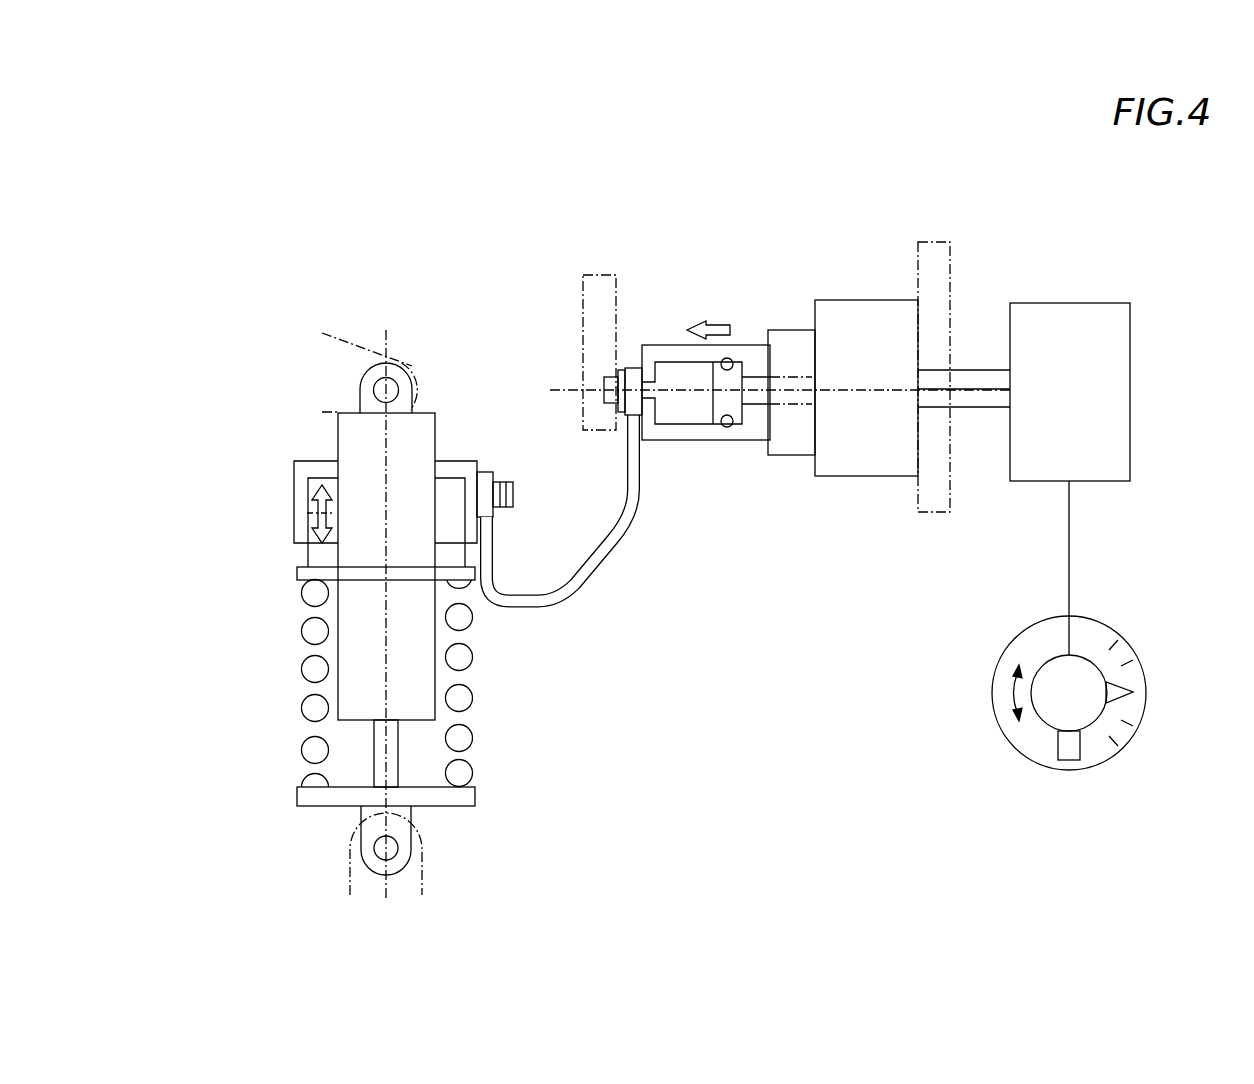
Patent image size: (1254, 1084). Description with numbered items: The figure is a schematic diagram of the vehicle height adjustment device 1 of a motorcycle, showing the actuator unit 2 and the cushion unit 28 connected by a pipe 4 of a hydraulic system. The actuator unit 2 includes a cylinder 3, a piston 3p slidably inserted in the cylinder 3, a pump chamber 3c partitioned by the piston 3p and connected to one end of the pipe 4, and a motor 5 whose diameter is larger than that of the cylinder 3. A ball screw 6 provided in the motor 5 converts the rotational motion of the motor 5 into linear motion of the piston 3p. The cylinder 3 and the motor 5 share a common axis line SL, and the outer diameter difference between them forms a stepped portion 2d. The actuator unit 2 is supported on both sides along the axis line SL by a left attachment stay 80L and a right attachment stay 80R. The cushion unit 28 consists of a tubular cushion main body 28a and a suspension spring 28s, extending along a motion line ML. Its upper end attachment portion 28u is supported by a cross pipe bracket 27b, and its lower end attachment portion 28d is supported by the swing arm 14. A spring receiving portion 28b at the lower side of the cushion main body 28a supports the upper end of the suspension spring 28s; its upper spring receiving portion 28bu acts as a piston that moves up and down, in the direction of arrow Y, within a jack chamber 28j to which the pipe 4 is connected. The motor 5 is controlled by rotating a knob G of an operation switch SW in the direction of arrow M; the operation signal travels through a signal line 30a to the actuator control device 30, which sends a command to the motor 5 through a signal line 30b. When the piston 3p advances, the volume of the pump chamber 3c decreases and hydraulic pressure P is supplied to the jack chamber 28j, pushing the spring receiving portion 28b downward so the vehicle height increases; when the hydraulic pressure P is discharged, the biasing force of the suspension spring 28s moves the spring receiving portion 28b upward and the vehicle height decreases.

The vehicle height adjustment device 1 is at (500, 225).
The actuator unit 2 is at (809, 288).
The stepped portion 2d is at (810, 456).
The cylinder 3 is at (660, 345).
The pump chamber 3c is at (678, 415).
The piston 3p is at (735, 430).
The pipe 4 is at (602, 588).
The motor 5 is at (865, 310).
The ball screw 6 is at (795, 372).
The swing arm 14 is at (423, 880).
The cross pipe bracket 27b is at (355, 340).
The cushion unit 28 is at (330, 432).
The cushion main body 28a is at (352, 452).
The spring receiving portion 28b is at (290, 576).
The upper spring receiving portion 28bu is at (312, 556).
The lower end attachment portion 28d is at (395, 848).
The jack chamber 28j is at (450, 482).
The suspension spring 28s is at (465, 702).
The upper end attachment portion 28u is at (400, 364).
The actuator control device 30 is at (1075, 303).
The signal line 30a is at (1072, 552).
The signal line 30b is at (985, 370).
The right attachment stay 80R is at (583, 310).
The left attachment stay 80L is at (950, 245).
The hydraulic pressure P is at (718, 322).
The arrow Y is at (307, 518).
The arrow M is at (1003, 694).
The operation switch SW is at (1008, 768).
The knob G is at (1085, 725).
The axis line SL is at (878, 392).
The motion line ML is at (390, 622).